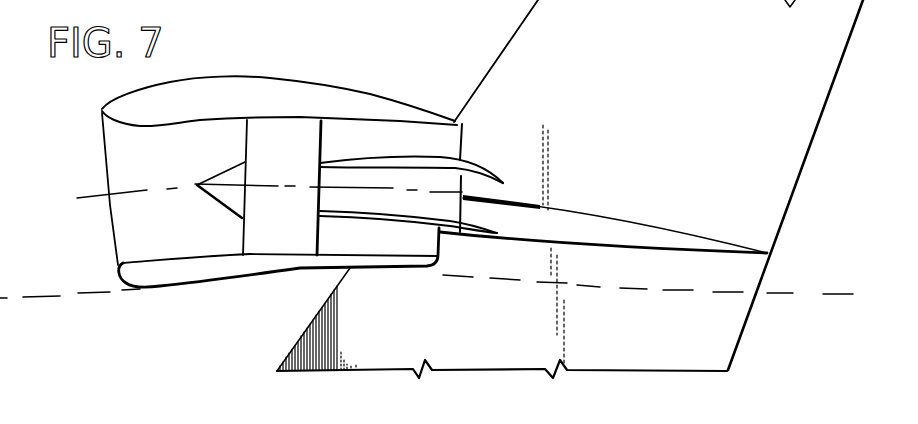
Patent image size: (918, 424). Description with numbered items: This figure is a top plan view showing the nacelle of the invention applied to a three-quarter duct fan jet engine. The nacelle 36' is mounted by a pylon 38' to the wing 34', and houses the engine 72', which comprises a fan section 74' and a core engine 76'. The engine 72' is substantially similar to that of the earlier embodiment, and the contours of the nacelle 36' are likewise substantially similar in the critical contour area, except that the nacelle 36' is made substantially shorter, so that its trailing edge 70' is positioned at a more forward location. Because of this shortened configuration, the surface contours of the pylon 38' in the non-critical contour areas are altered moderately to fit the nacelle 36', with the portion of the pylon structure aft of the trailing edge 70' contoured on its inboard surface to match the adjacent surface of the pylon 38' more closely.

The wing 34' is at (438, 189).
The nacelle 36' is at (279, 149).
The pylon 38' is at (603, 197).
The trailing edge 70' is at (442, 91).
The engine 72' is at (389, 148).
The fan section 74' is at (269, 229).
The core engine 76' is at (408, 267).